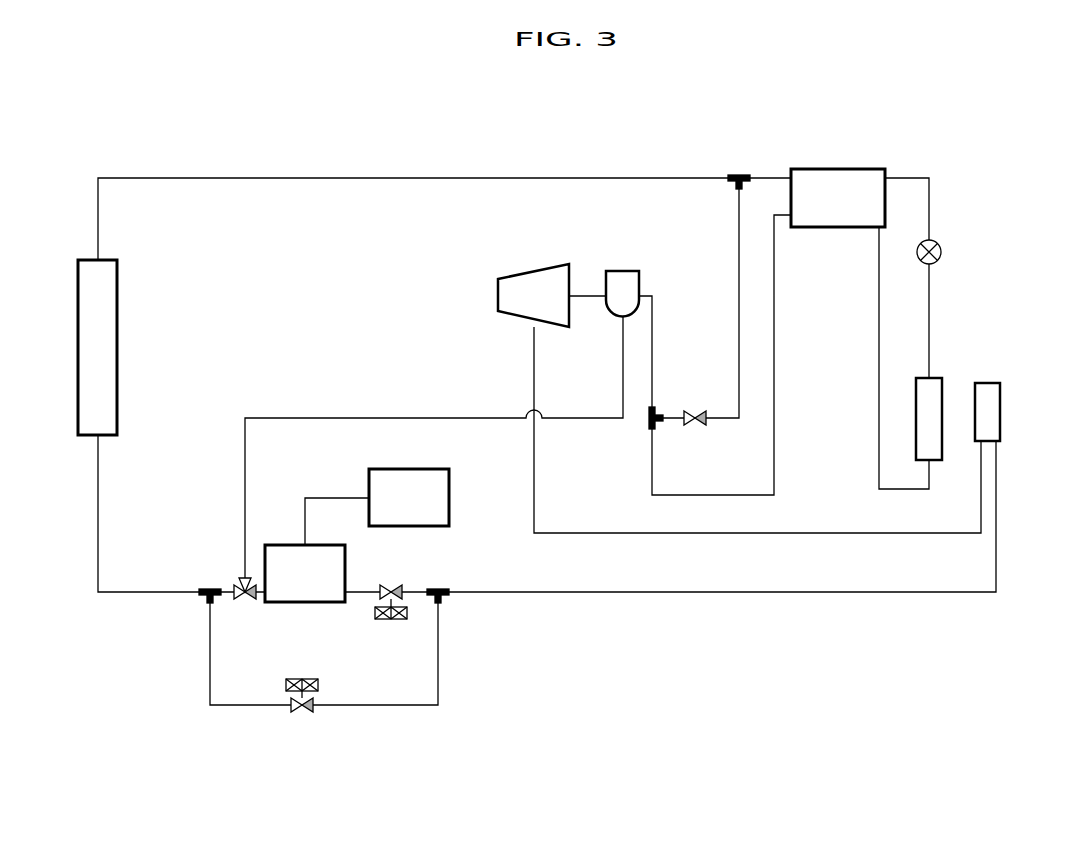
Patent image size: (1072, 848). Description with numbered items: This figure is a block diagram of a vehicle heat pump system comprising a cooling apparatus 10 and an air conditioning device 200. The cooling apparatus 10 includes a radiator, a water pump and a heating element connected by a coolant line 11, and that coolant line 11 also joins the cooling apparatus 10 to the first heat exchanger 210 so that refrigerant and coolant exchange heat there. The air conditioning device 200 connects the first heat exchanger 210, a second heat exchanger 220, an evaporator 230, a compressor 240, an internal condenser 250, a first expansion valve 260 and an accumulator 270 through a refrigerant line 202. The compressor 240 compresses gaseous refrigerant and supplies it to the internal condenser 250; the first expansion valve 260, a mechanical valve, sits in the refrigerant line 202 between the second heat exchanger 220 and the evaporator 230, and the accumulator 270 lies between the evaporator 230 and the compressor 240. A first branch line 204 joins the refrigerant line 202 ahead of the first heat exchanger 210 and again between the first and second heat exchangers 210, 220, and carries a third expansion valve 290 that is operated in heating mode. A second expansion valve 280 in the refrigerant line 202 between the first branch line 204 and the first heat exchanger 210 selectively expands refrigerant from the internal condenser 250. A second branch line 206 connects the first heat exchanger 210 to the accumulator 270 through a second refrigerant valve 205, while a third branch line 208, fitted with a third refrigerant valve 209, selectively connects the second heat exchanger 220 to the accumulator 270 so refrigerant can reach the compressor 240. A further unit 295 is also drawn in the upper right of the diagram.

The air conditioning device 200 is at (930, 128).
The refrigerant line 202 is at (385, 178).
The first branch line 204 is at (388, 705).
The second refrigerant valve 205 is at (240, 584).
The second branch line 206 is at (405, 418).
The third branch line 208 is at (774, 303).
The third refrigerant valve 209 is at (697, 428).
The cooling apparatus 10 is at (450, 495).
The coolant line 11 is at (305, 497).
The first heat exchanger 210 is at (305, 603).
The second heat exchanger 220 is at (118, 341).
The evaporator 230 is at (940, 377).
The compressor 240 is at (535, 264).
The internal condenser 250 is at (1001, 397).
The first expansion valve 260 is at (942, 250).
The accumulator 270 is at (625, 270).
The second expansion valve 280 is at (385, 620).
The third expansion valve 290 is at (303, 714).
The heat recovery unit 295 is at (836, 168).